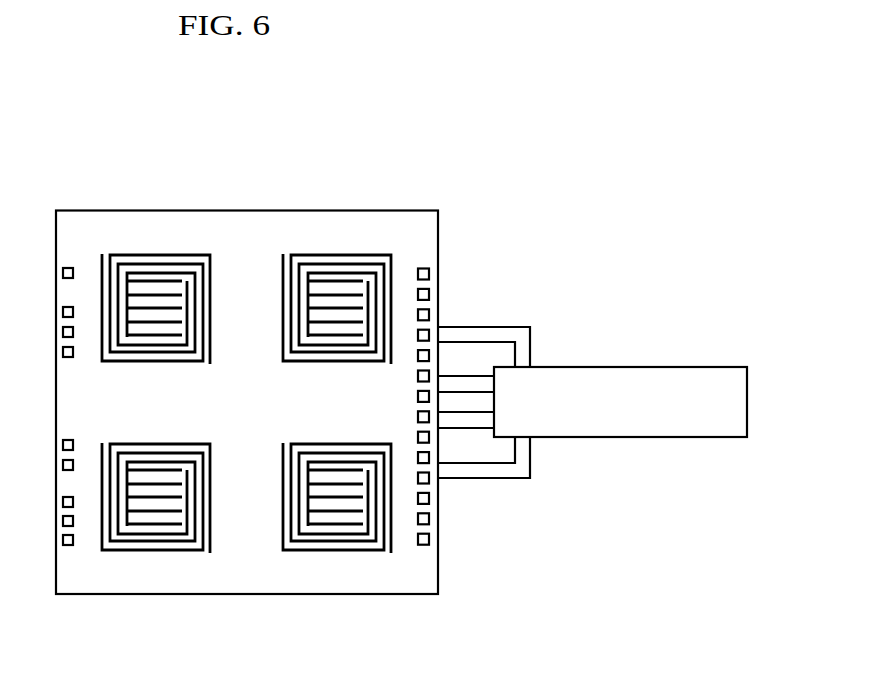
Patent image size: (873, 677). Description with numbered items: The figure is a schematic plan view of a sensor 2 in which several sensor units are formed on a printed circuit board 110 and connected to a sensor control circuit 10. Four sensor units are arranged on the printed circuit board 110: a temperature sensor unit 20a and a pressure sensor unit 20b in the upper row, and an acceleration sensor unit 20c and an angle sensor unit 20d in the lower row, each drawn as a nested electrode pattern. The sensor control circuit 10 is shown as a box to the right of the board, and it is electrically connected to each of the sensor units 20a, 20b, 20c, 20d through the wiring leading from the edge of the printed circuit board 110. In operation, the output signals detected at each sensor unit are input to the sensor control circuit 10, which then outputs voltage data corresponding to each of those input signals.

The sensor 2 is at (101, 185).
The printed circuit board 110 is at (423, 228).
The temperature sensor unit 20a is at (159, 260).
The pressure sensor unit 20b is at (338, 260).
The acceleration sensor unit 20c is at (157, 548).
The angle sensor unit 20d is at (337, 548).
The sensor control circuit 10 is at (677, 372).